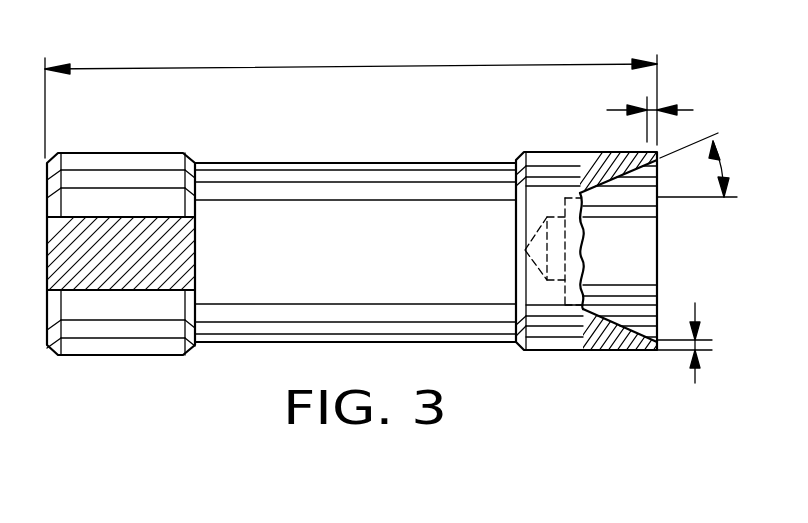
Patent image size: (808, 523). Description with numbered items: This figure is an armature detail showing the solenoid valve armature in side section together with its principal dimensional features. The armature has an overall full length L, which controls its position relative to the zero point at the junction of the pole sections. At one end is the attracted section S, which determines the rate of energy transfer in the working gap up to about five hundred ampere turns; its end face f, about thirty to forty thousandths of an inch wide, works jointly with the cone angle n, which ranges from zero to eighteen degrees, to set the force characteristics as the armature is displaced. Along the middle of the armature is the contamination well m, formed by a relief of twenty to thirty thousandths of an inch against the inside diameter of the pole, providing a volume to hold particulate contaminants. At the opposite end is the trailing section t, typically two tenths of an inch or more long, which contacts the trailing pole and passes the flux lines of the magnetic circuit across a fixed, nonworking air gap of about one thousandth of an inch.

The full length of the armature L is at (341, 67).
The contamination well m is at (297, 163).
The trailing section t is at (180, 353).
The attracted section S is at (647, 106).
The cone angle n is at (724, 162).
The end face f is at (700, 346).